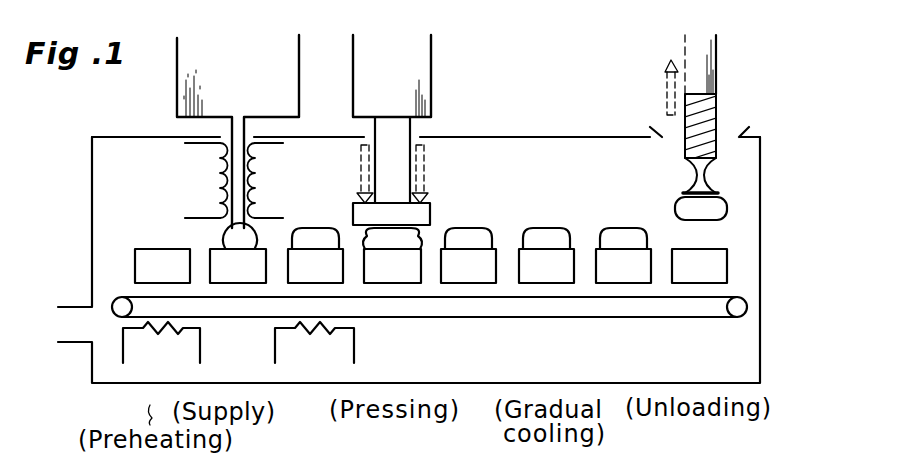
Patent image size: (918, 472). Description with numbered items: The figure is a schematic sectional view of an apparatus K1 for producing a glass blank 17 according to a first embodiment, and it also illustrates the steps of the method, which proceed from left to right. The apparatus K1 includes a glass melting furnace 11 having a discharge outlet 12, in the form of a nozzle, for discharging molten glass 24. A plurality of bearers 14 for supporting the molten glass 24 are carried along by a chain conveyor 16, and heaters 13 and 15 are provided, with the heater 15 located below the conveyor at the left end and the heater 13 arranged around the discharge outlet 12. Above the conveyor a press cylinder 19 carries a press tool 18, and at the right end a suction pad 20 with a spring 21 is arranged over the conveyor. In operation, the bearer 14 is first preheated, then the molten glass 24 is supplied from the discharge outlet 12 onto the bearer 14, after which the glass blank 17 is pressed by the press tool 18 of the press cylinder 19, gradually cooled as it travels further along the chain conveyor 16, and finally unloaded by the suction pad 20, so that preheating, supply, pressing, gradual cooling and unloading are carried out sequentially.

The apparatus K1 is at (802, 83).
The glass melting furnace 11 is at (193, 72).
The discharge outlet 12 is at (238, 210).
The heater 13 is at (248, 170).
The bearer 14 is at (218, 262).
The heater 15 is at (205, 333).
The chain conveyor 16 is at (450, 306).
The glass blank 17 is at (718, 208).
The press tool 18 is at (418, 212).
The press cylinder 19 is at (408, 80).
The suction pad 20 is at (694, 185).
The spring 21 is at (705, 116).
The molten glass 24 is at (244, 238).